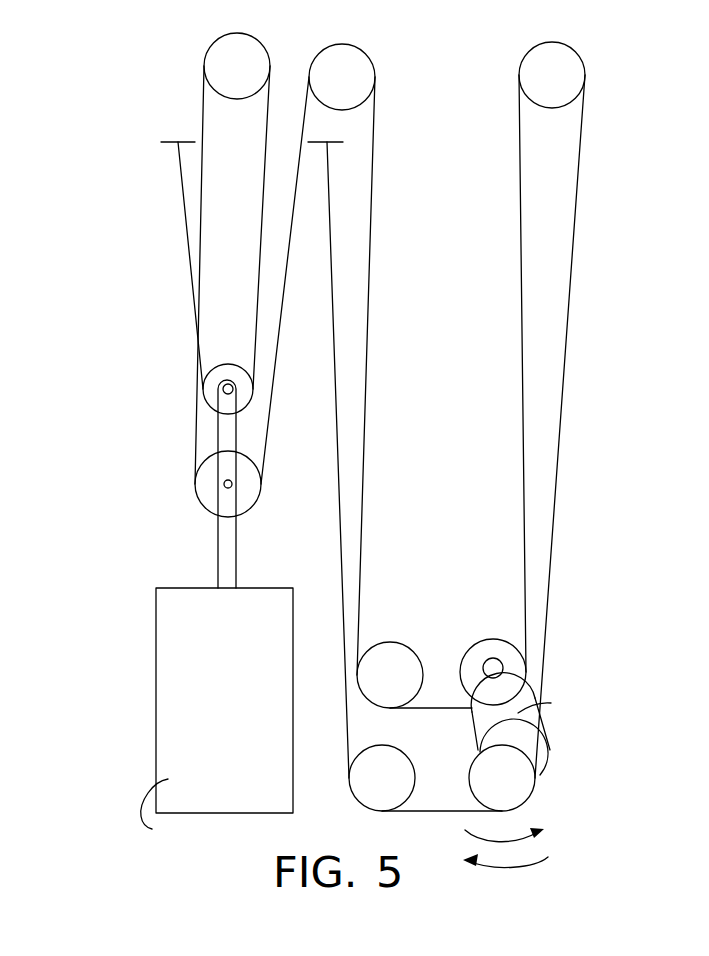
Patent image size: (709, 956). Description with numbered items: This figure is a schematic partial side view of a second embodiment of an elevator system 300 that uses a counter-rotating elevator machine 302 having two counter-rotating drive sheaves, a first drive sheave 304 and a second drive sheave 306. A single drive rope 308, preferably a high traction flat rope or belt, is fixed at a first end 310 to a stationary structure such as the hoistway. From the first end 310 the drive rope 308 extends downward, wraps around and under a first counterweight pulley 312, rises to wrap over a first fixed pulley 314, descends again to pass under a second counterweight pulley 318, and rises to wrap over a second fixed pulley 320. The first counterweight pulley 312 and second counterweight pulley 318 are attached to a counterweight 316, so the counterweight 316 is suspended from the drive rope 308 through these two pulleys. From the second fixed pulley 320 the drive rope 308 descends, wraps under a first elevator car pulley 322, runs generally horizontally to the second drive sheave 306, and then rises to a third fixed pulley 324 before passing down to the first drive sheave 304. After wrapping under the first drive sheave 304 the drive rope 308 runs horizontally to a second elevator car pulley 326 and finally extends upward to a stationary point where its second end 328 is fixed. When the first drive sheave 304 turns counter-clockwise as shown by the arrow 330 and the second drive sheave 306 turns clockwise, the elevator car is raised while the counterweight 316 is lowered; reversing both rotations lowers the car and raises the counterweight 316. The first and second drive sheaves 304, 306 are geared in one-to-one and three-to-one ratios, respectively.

The elevator system 300 is at (622, 167).
The elevator machine 302 is at (558, 720).
The first drive sheave 304 is at (519, 784).
The second drive sheave 306 is at (518, 671).
The drive rope 308 is at (568, 357).
The first end 310 is at (178, 143).
The first counterweight pulley 312 is at (213, 392).
The first fixed pulley 314 is at (215, 63).
The counterweight 316 is at (177, 607).
The second counterweight pulley 318 is at (206, 479).
The second fixed pulley 320 is at (360, 68).
The first elevator car pulley 322 is at (364, 678).
The third fixed pulley 324 is at (573, 72).
The second elevator car pulley 326 is at (362, 790).
The second end 328 is at (328, 143).
The arrow 330 is at (508, 848).